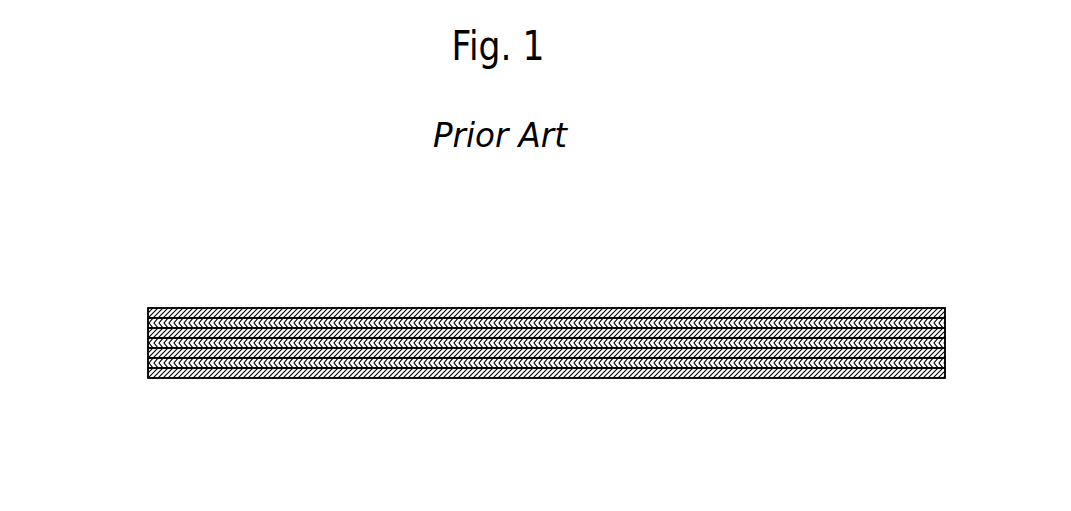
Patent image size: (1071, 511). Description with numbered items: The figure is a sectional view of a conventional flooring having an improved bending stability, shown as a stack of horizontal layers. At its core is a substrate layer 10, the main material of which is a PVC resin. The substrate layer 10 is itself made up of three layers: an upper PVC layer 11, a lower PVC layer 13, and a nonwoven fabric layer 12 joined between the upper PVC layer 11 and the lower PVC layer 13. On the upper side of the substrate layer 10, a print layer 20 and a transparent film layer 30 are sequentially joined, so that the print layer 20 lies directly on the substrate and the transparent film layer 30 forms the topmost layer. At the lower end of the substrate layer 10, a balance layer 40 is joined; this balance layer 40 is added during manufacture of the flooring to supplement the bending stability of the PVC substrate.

The substrate layer 10 is at (487, 362).
The upper PVC layer 11 is at (148, 329).
The nonwoven fabric layer 12 is at (148, 350).
The lower PVC layer 13 is at (510, 382).
The print layer 20 is at (148, 318).
The transparent film layer 30 is at (148, 309).
The balance layer 40 is at (148, 378).